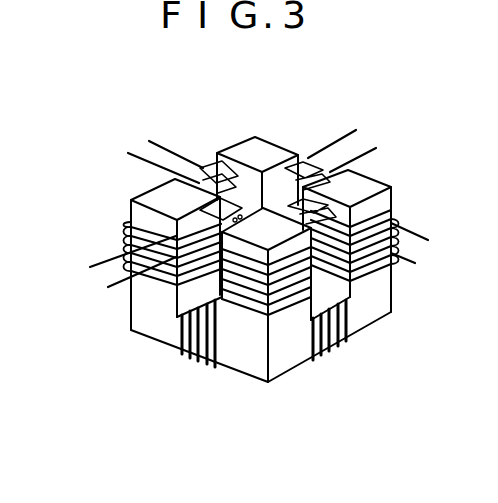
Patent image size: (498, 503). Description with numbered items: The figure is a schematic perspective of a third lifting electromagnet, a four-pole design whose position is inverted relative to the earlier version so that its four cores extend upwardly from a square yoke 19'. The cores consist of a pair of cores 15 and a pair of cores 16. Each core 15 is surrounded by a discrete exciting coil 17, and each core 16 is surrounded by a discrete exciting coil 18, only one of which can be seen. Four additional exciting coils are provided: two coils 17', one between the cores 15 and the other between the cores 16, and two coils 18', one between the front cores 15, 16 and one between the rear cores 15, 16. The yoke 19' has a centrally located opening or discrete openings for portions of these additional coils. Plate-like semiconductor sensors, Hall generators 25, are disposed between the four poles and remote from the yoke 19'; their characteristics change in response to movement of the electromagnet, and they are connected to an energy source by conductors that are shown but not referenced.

The core 15 is at (388, 200).
The core 16 is at (237, 152).
The exciting coil 17 is at (317, 311).
The additional exciting coil 17' is at (354, 337).
The exciting coil 18 is at (186, 286).
The additional exciting coil 18' is at (189, 360).
The square yoke 19' is at (244, 354).
The plate-like semiconductors (Hall generators) 25 is at (200, 170).